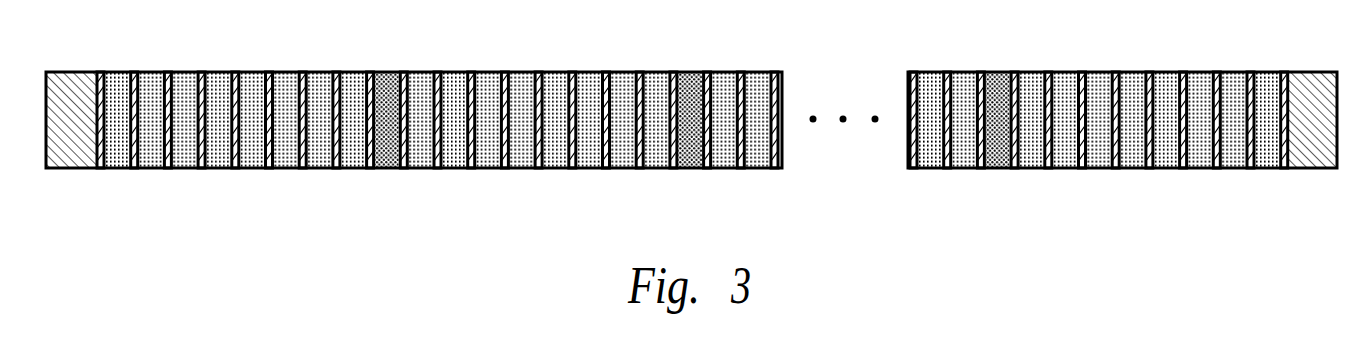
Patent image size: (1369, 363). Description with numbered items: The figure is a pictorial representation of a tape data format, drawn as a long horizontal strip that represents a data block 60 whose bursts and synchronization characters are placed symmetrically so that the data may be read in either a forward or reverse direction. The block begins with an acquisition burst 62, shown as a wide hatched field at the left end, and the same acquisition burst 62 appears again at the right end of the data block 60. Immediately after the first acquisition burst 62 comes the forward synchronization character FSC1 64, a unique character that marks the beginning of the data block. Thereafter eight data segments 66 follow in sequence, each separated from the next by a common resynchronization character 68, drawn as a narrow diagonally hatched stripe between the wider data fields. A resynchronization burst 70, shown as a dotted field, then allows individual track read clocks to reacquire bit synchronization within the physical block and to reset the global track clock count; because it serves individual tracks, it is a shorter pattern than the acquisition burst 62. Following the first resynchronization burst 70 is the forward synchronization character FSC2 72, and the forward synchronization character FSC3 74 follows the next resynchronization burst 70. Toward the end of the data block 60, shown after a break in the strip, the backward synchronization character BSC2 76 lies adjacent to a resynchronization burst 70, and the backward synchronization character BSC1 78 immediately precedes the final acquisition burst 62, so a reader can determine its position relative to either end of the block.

The data block 60 is at (76, 185).
The acquisition burst 62 is at (80, 72).
The forward synchronization character FSC1 64 is at (100, 168).
The data segments 66 is at (244, 72).
The resynchronization character 68 is at (233, 168).
The resynchronization burst 70 is at (392, 72).
The forward synchronization character 2 (FSC2) 72 is at (402, 168).
The forward synchronization character 3 (FSC3) 74 is at (710, 72).
The backward synchronization character 2 (BSC2) 76 is at (978, 168).
The backward synchronization character 1 (BSC1) 78 is at (1282, 72).